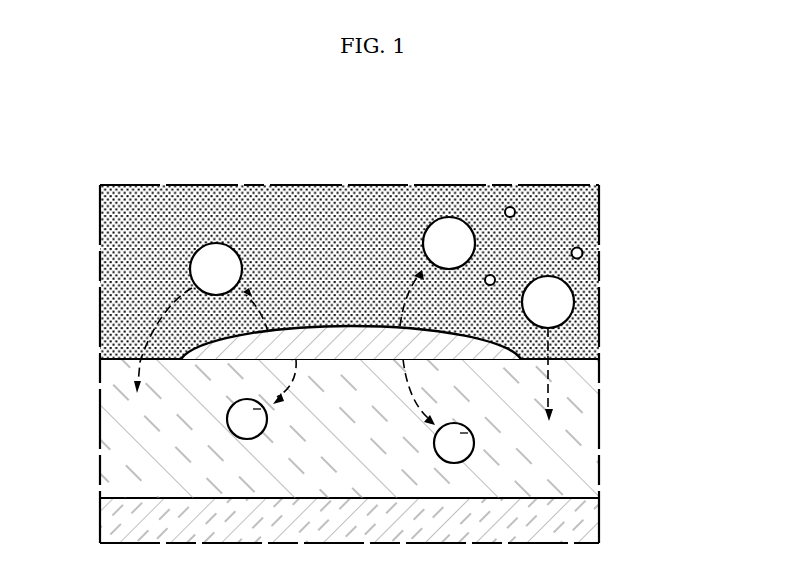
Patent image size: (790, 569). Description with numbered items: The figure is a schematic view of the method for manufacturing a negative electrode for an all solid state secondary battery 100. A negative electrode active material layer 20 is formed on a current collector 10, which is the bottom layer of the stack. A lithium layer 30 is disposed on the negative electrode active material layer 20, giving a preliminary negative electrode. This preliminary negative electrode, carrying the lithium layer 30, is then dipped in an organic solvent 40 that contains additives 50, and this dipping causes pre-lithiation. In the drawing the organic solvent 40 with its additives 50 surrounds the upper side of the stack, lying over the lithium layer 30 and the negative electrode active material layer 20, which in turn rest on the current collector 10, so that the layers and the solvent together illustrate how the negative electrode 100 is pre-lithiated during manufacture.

The negative electrode for all solid state secondary battery 100 is at (205, 123).
The current collector 10 is at (590, 522).
The negative electrode active material layer 20 is at (590, 438).
The lithium layer 30 is at (480, 348).
The organic solvent 40 is at (592, 216).
The additives 50 is at (510, 206).